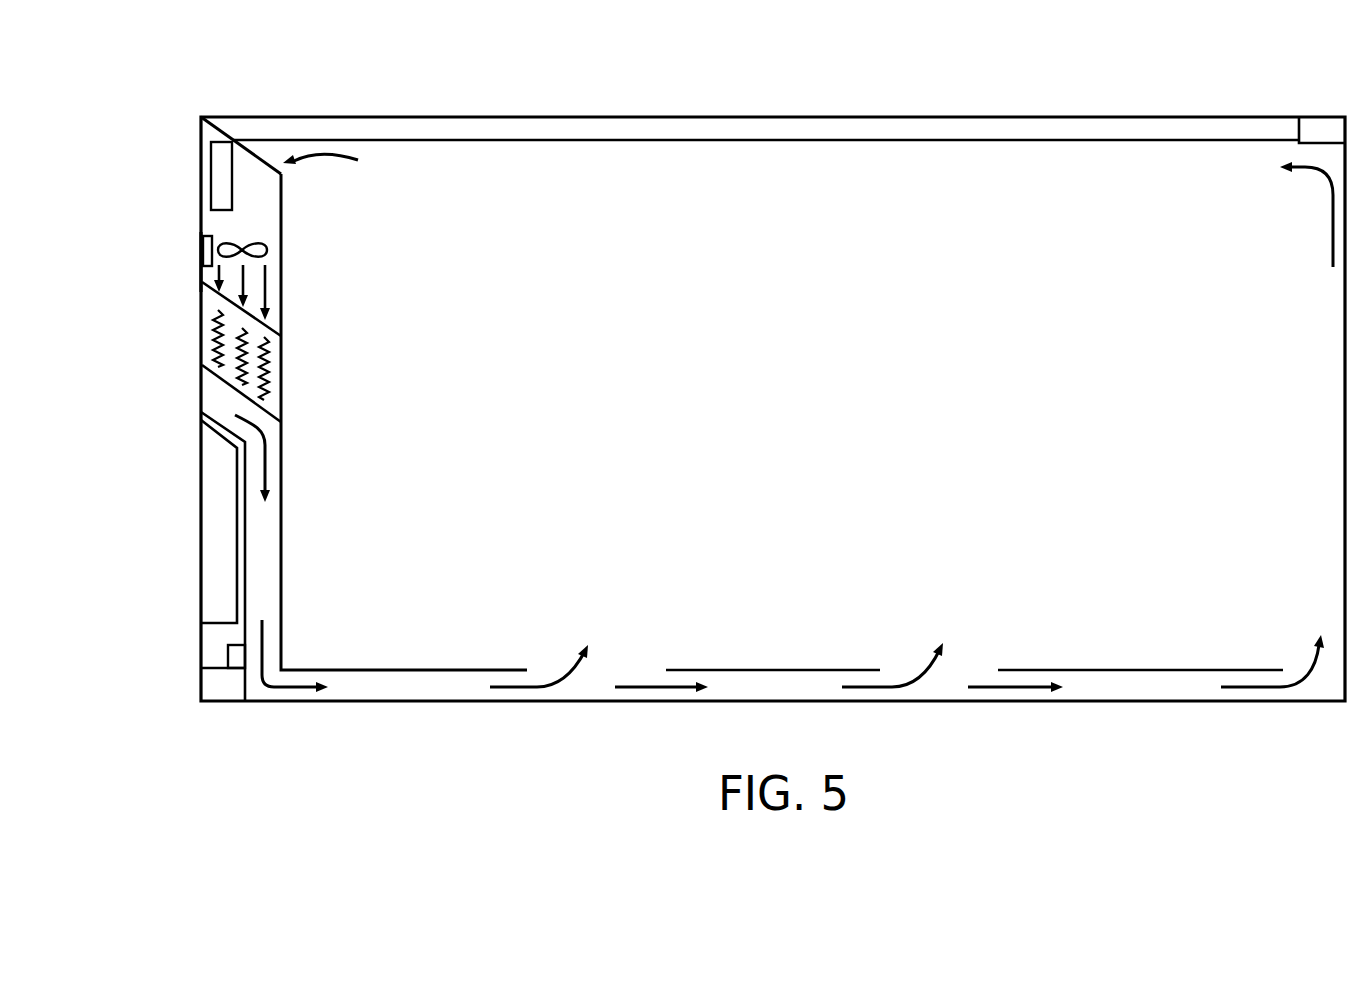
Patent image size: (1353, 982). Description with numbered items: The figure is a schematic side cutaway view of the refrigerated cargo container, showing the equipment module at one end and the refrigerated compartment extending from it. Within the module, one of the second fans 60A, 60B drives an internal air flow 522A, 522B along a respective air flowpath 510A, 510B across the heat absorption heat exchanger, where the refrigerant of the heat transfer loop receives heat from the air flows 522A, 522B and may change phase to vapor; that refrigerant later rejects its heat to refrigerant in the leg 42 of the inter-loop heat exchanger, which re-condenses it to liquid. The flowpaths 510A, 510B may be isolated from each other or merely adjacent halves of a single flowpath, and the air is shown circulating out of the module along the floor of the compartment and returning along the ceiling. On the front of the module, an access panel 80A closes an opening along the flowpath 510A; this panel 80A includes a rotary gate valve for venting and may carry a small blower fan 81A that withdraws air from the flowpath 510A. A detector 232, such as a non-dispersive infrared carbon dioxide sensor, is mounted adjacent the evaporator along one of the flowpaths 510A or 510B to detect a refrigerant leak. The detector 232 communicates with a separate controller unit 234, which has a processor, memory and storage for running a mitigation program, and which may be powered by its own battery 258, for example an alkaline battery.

The detector 232 is at (216, 174).
The internal air flow 522A is at (343, 280).
The internal air flow 522B is at (328, 153).
The air flowpath 510A is at (338, 226).
The air flowpath 510B is at (260, 218).
The second fan 60A is at (339, 243).
The second fan 60B is at (268, 250).
The blower fan 81A is at (205, 243).
The access panel 80A is at (191, 262).
The leg of inter-loop heat exchanger 42 is at (252, 340).
The separate controller unit 234 is at (215, 650).
The battery 258 is at (237, 658).